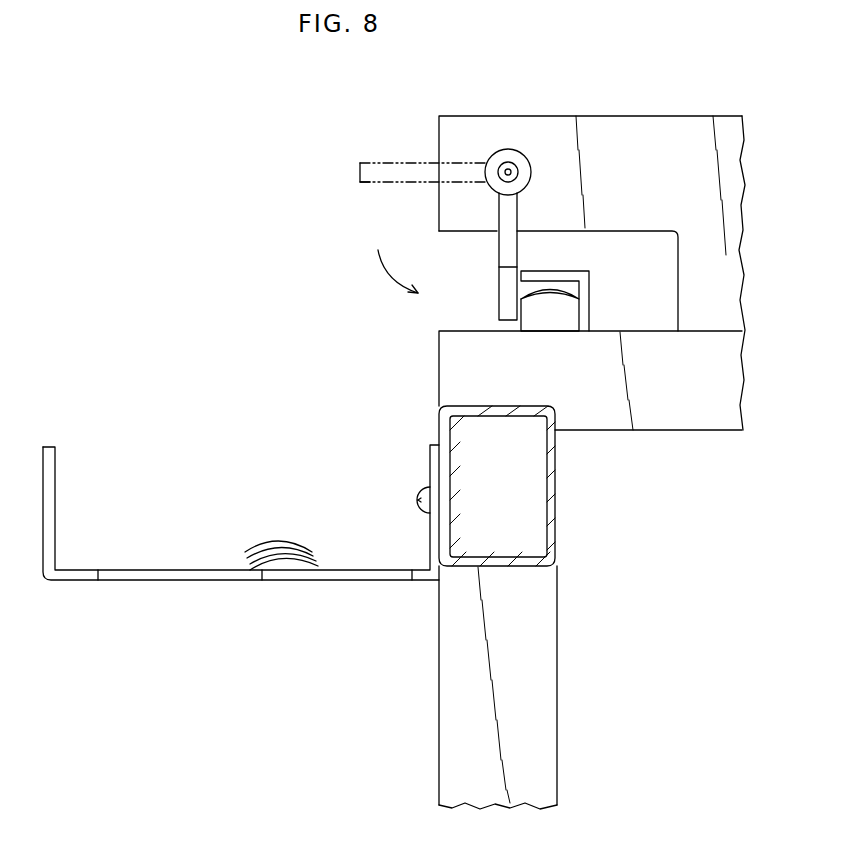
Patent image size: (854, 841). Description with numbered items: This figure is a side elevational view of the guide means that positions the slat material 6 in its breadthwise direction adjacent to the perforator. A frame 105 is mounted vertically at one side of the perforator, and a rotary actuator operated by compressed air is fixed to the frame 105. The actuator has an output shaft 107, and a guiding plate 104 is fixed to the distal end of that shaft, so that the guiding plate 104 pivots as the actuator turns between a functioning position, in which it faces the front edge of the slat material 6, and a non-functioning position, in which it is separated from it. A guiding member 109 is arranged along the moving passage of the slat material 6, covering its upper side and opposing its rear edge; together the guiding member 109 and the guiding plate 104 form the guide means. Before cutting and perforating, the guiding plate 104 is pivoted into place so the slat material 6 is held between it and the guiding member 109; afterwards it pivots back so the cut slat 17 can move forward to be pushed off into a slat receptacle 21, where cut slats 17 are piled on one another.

The frame 105 is at (609, 116).
The guiding plate 104 is at (410, 163).
The output shaft 107 is at (518, 172).
The slat material 6 is at (550, 288).
The guiding member 109 is at (589, 300).
The slat receptacle 21 is at (146, 570).
The cut slat 17 is at (286, 543).